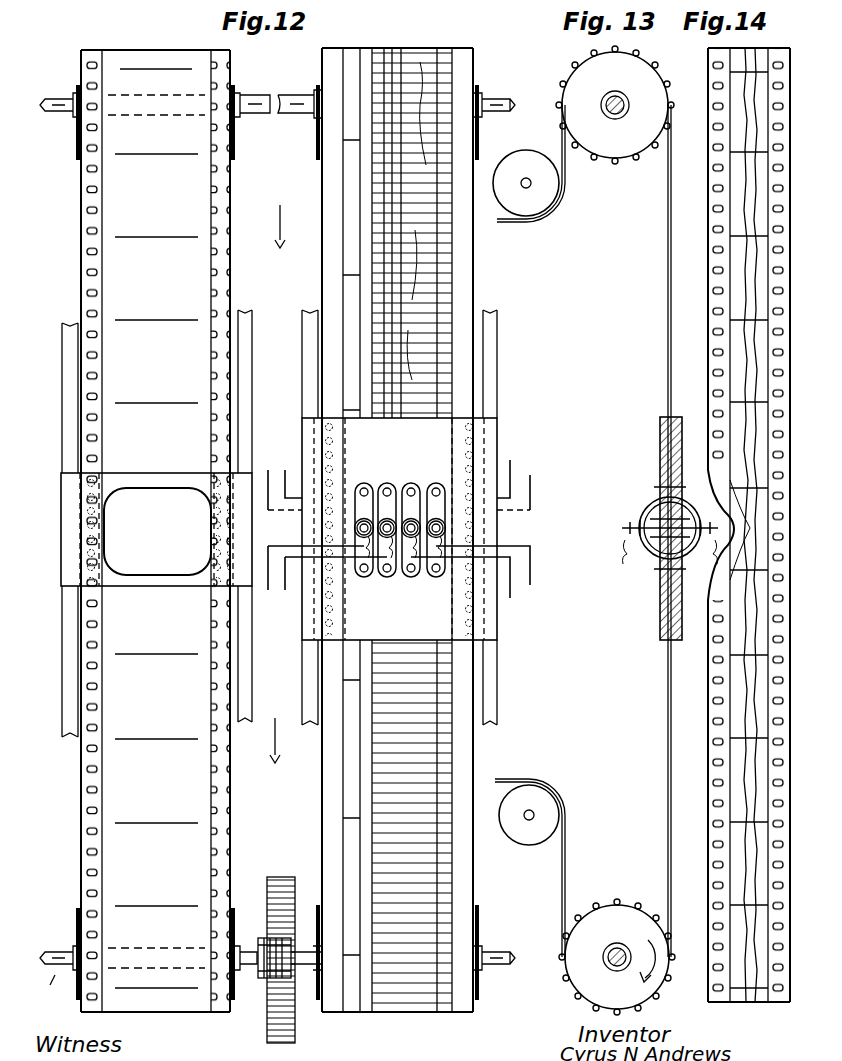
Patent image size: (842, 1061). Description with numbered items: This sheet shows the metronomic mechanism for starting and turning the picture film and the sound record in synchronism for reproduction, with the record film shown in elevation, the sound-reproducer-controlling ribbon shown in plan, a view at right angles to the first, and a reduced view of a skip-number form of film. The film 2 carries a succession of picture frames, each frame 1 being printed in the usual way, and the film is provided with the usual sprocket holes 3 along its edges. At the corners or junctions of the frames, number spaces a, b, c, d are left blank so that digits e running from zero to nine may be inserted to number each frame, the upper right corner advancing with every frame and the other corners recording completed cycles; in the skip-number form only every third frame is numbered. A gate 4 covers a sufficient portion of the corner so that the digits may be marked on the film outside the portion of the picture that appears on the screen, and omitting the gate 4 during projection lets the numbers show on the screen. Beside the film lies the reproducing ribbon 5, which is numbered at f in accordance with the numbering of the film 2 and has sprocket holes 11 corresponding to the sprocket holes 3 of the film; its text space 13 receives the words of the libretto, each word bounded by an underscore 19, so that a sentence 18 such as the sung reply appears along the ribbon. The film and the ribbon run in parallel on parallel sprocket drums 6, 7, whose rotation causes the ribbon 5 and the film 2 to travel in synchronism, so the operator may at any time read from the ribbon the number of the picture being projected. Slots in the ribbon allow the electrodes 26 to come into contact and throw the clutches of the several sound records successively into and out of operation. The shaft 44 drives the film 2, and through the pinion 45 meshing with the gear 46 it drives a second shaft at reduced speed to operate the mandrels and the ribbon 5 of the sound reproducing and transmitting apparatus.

In FIG. 12, the frame 1 is at (120, 210).
In FIG. 14, the frame 1 is at (730, 277).
In FIG. 12, the film 2 is at (82, 220).
In FIG. 14, the film 2 is at (710, 188).
In FIG. 12, the sprocket holes 3 is at (92, 229).
In FIG. 14, the sprocket holes 3 is at (712, 352).
In FIG. 12, the gate 4 is at (72, 492).
In FIG. 12, the reproducing ribbon 5 is at (322, 275).
In FIG. 13, the reproducing ribbon 5 is at (665, 325).
In FIG. 12, the sprocket drum 6 is at (78, 62).
In FIG. 13, the sprocket drum 6 is at (615, 530).
In FIG. 12, the sprocket drum 7 is at (478, 58).
In FIG. 12, the sprocket holes 11 is at (470, 270).
In FIG. 12, the text space 13 is at (380, 762).
In FIG. 12, the sentence 18 is at (430, 244).
In FIG. 13, the sentence 18 is at (526, 497).
In FIG. 12, the underscore 19 is at (435, 146).
In FIG. 12, the electrodes 26 is at (445, 525).
In FIG. 13, the electrodes 26 is at (650, 556).
In FIG. 12, the shaft 44 is at (56, 970).
In FIG. 12, the pinion 45 is at (265, 978).
In FIG. 12, the gear 46 is at (295, 1030).
In FIG. 12, the number space a is at (205, 237).
In FIG. 14, the number space a is at (738, 236).
In FIG. 12, the number space b is at (204, 320).
In FIG. 12, the number space c is at (110, 320).
In FIG. 12, the number space d is at (112, 237).
In FIG. 12, the digits e is at (200, 400).
In FIG. 14, the digits e is at (720, 58).
In FIG. 12, the ribbon numbering f is at (340, 212).